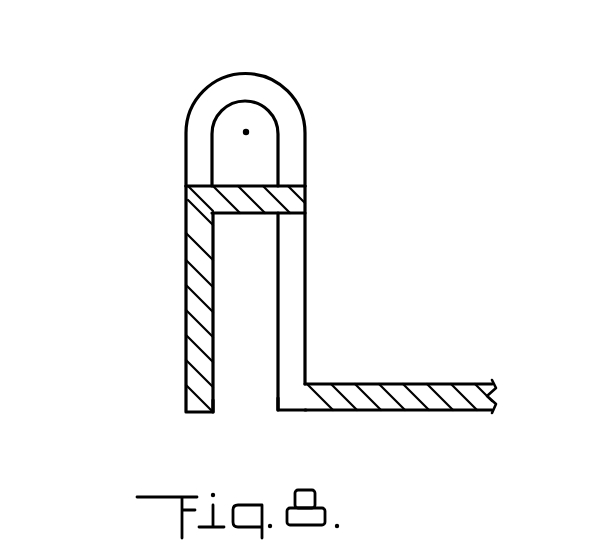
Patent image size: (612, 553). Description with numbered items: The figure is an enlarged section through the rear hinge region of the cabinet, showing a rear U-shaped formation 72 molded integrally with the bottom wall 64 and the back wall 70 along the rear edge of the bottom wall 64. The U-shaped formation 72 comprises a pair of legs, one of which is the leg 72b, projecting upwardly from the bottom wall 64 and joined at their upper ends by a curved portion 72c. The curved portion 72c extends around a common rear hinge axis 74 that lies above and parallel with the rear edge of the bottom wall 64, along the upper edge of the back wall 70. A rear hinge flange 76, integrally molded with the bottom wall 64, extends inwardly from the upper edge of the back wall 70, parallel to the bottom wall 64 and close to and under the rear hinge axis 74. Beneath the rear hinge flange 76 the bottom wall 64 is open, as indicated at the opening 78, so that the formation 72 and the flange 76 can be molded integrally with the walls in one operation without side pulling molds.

The bottom wall 64 is at (454, 383).
The back wall 70 is at (186, 311).
The rear U-shaped formation 72 is at (166, 117).
The leg 72b is at (305, 270).
The curved portion 72c is at (263, 74).
The rear hinge axis 74 is at (249, 132).
The rear hinge flange 76 is at (237, 214).
The opening 78 is at (236, 397).